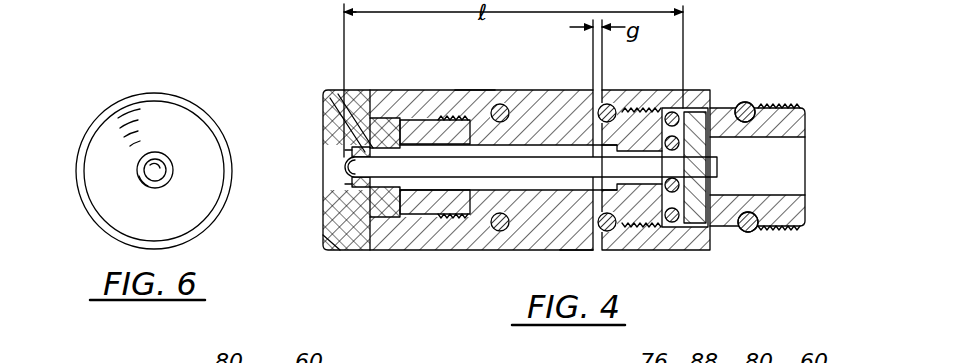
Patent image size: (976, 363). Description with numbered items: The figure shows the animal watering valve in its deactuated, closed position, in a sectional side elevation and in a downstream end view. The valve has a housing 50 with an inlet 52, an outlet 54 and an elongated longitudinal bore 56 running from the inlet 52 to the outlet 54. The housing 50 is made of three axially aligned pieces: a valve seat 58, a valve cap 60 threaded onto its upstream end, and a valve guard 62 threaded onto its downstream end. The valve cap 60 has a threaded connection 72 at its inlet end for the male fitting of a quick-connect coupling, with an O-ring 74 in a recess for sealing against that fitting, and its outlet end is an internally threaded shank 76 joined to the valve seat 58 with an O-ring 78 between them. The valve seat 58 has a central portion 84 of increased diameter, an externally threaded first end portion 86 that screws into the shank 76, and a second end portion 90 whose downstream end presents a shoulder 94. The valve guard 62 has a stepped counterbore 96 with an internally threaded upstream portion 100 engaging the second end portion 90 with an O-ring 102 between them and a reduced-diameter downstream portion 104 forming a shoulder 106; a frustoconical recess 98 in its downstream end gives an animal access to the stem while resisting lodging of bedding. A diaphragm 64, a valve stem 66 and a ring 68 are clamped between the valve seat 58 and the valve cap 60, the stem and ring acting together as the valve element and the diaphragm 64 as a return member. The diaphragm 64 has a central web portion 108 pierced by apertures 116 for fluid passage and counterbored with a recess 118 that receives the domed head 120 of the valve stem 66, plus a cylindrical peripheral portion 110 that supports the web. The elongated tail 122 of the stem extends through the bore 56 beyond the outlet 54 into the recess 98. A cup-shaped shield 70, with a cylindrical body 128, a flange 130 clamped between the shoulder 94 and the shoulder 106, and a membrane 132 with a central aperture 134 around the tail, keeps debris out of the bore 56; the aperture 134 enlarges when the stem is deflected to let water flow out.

In FIG. 4, the housing 50 is at (388, 254).
In FIG. 4, the inlet 52 is at (735, 143).
In FIG. 6, the outlet 54 is at (157, 153).
In FIG. 4, the outlet 54 is at (368, 180).
In FIG. 4, the elongated longitudinal bore 56 is at (538, 143).
In FIG. 4, the valve seat 58 is at (578, 60).
In FIG. 4, the valve cap 60 is at (721, 82).
In FIG. 6, the valve guard 62 is at (138, 94).
In FIG. 4, the valve guard 62 is at (473, 87).
In FIG. 4, the diaphragm 64 is at (714, 99).
In FIG. 4, the valve stem 66 is at (538, 193).
In FIG. 4, the ring 68 is at (655, 250).
In FIG. 4, the shield 70 is at (374, 121).
In FIG. 4, the threaded connection 72 is at (790, 226).
In FIG. 4, the O-ring 74 is at (750, 232).
In FIG. 4, the internally threaded shank 76 is at (650, 90).
In FIG. 4, the O-ring 78 is at (618, 91).
In FIG. 4, the central portion 84 is at (578, 250).
In FIG. 4, the first end portion 86 is at (625, 246).
In FIG. 4, the second end portion 90 is at (445, 216).
In FIG. 4, the shoulder 94 is at (342, 242).
In FIG. 4, the counterbore 96 is at (418, 250).
In FIG. 6, the frustoconical recess 98 is at (130, 118).
In FIG. 4, the frustoconical recess 98 is at (328, 112).
In FIG. 4, the upstream portion 100 is at (453, 214).
In FIG. 4, the O-ring 102 is at (501, 100).
In FIG. 4, the downstream portion 104 is at (427, 119).
In FIG. 4, the shoulder 106 is at (401, 90).
In FIG. 4, the central web portion 108 is at (714, 200).
In FIG. 4, the cylindrical peripheral portion 110 is at (690, 87).
In FIG. 4, the apertures 116 is at (711, 206).
In FIG. 4, the recess 118 is at (766, 130).
In FIG. 4, the head 120 is at (708, 168).
In FIG. 6, the tail 122 is at (140, 166).
In FIG. 4, the tail 122 is at (346, 166).
In FIG. 4, the cylindrical body 128 is at (340, 222).
In FIG. 4, the flange 130 is at (382, 238).
In FIG. 6, the membrane 132 is at (140, 180).
In FIG. 4, the membrane 132 is at (362, 190).
In FIG. 6, the central aperture 134 is at (170, 160).
In FIG. 4, the central aperture 134 is at (356, 151).